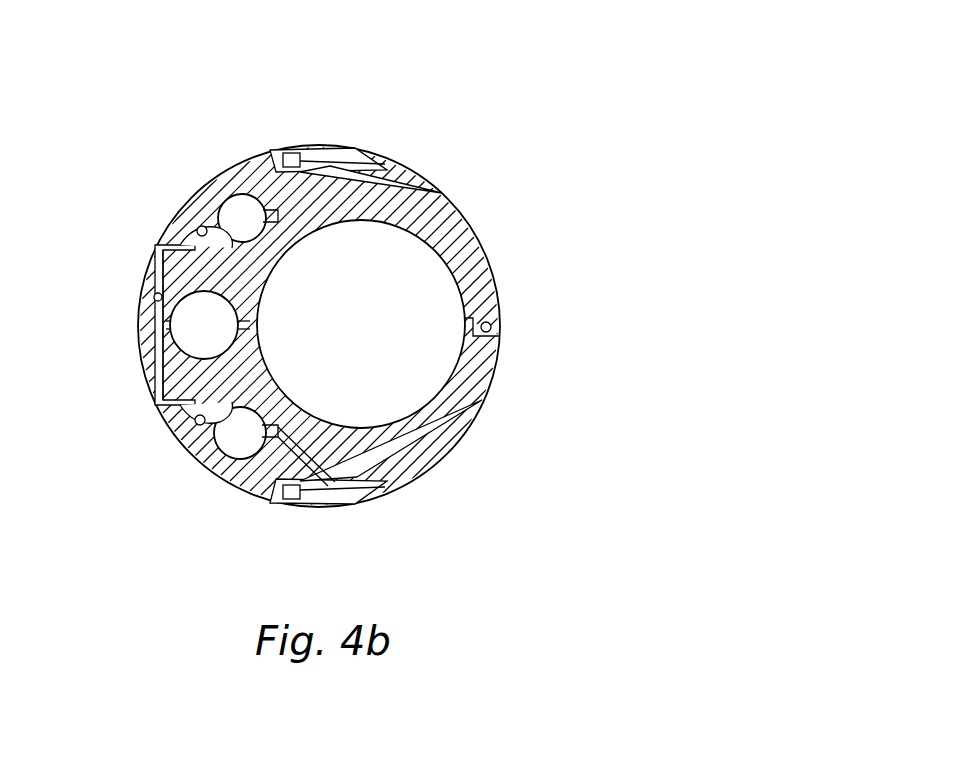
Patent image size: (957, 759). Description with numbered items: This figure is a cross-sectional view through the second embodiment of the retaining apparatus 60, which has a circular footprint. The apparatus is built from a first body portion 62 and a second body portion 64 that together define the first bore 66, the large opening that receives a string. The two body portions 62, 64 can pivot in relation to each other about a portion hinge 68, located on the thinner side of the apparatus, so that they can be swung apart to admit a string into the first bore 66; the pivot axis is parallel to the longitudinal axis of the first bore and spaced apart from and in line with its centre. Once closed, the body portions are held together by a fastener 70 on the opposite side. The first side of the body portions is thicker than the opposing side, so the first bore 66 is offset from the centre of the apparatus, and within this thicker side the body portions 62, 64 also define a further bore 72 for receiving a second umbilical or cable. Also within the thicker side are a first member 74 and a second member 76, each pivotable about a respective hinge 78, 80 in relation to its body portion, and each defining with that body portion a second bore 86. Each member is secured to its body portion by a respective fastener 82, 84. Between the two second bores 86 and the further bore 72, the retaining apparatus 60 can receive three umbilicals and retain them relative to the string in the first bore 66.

The retaining apparatus 60 is at (513, 142).
The first body portion 62 is at (443, 217).
The second body portion 64 is at (465, 426).
The first bore 66 is at (361, 324).
The portion hinge 68 is at (492, 326).
The fastener 70 is at (150, 318).
The further bore 72 is at (208, 325).
The first member 74 is at (402, 168).
The second member 76 is at (366, 502).
The hinge 78 is at (198, 230).
The hinge 80 is at (195, 422).
The fastener 82 is at (358, 165).
The fastener 84 is at (385, 485).
The second bore 86 is at (240, 215).